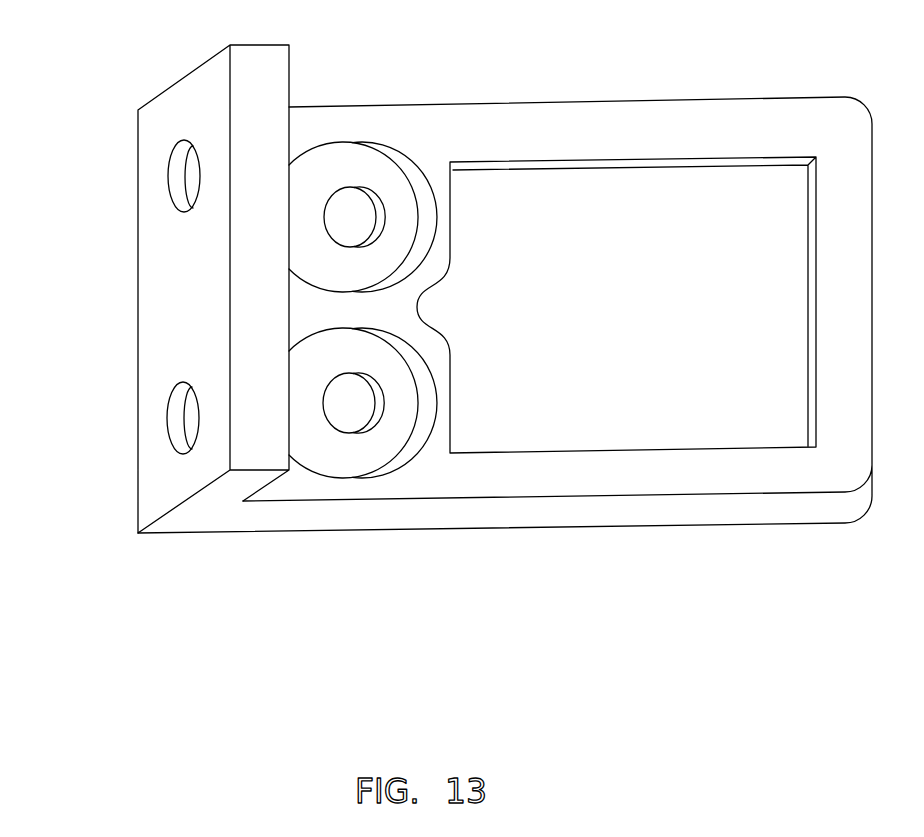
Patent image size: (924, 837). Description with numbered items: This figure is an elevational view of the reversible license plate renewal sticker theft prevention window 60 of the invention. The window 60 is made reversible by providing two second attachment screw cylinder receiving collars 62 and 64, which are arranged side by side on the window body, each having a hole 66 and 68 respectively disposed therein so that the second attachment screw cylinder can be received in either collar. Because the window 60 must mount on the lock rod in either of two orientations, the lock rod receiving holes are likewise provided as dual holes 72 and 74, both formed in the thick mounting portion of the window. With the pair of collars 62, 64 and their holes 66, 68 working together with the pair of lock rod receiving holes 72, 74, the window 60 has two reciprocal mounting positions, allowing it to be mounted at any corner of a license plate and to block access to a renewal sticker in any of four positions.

The reversible license plate renewal sticker theft prevention window 60 is at (605, 100).
The second attachment screw cylinder receiving collar 62 is at (307, 225).
The second attachment screw cylinder receiving collar 64 is at (402, 383).
The hole 66 is at (355, 190).
The hole 68 is at (352, 415).
The lock rod receiving hole 72 is at (180, 170).
The lock rod receiving hole 74 is at (190, 418).